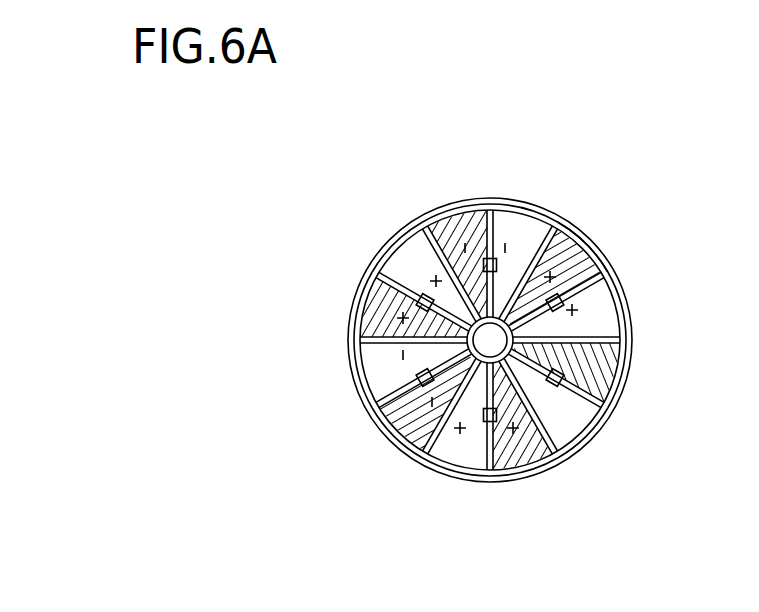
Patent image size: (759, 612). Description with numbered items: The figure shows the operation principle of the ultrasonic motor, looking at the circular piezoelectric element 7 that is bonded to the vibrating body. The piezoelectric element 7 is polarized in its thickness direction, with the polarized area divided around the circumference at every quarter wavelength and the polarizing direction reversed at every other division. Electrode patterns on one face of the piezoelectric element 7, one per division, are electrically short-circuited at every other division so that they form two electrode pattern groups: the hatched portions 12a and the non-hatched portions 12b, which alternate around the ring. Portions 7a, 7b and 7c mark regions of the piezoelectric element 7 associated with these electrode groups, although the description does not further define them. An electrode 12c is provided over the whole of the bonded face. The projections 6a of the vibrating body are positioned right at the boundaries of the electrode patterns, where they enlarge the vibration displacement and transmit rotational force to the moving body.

The piezoelectric element 7 is at (626, 180).
The vibrator ring portion over driving electrode 7a is at (433, 212).
The vibrator ring portion over non-driven electrode 7b is at (523, 210).
The vibrator ring portion over detecting electrode 7c is at (655, 237).
The hatched portions 12a is at (468, 212).
The non-hatched portions 12b is at (537, 217).
The electrode 12c is at (566, 242).
The projections 6a is at (427, 296).